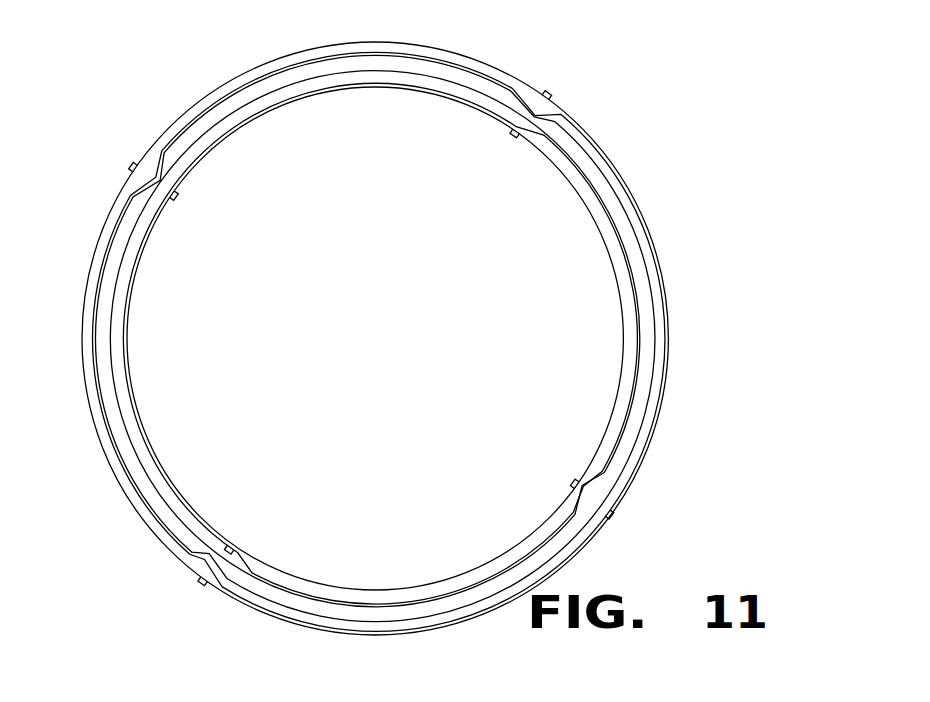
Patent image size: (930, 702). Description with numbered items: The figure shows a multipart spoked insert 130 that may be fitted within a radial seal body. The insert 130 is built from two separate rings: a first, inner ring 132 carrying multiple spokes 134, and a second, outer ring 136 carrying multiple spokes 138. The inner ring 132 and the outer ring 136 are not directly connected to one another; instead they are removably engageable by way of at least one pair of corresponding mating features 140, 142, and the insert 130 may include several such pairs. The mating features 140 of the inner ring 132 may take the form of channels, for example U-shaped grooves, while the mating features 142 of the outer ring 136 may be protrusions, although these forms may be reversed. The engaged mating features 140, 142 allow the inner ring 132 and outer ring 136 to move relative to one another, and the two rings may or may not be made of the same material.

The spoked insert 130 is at (582, 97).
The inner ring 132 is at (248, 137).
The spokes 134 is at (177, 198).
The outer ring 136 is at (222, 93).
The spokes 138 is at (128, 168).
The mating features 140 is at (194, 582).
The mating features 142 is at (245, 578).